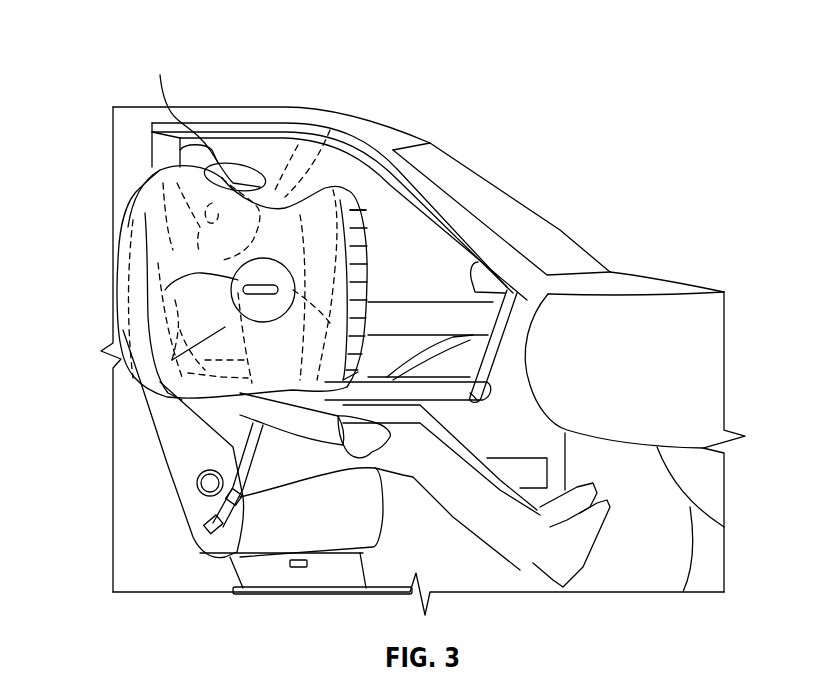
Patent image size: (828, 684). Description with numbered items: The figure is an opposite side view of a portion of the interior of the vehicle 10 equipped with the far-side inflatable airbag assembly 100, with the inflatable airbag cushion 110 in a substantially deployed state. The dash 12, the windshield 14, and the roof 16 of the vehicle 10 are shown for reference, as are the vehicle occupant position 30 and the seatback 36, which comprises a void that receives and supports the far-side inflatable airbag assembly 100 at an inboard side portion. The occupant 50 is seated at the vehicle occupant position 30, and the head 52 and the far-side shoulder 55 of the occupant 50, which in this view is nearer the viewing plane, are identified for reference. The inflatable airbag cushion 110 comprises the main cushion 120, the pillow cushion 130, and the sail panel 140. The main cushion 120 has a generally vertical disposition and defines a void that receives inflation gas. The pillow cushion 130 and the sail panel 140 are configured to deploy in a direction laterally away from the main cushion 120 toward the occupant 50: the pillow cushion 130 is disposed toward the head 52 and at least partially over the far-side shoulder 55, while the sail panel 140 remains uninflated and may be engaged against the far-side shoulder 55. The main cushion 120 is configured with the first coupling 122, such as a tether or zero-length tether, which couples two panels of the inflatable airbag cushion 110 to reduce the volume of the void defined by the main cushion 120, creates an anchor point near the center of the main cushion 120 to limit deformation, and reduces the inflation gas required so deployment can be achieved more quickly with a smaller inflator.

The vehicle 10 is at (664, 45).
The dashboard/instrument panel 12 is at (593, 364).
The windshield 14 is at (523, 203).
The roof 16 is at (260, 109).
The vehicle occupant position 30 is at (173, 493).
The seatback 36 is at (203, 437).
The occupant 50 is at (229, 87).
The head 52 is at (204, 116).
The far-side shoulder 55 is at (133, 348).
The far-side inflatable airbag assembly 100 is at (398, 111).
The inflatable airbag cushion 110 is at (442, 136).
The main cushion 120 is at (310, 357).
The first coupling 122 is at (263, 287).
The pillow cushion 130 is at (331, 125).
The sail panel 140 is at (130, 378).